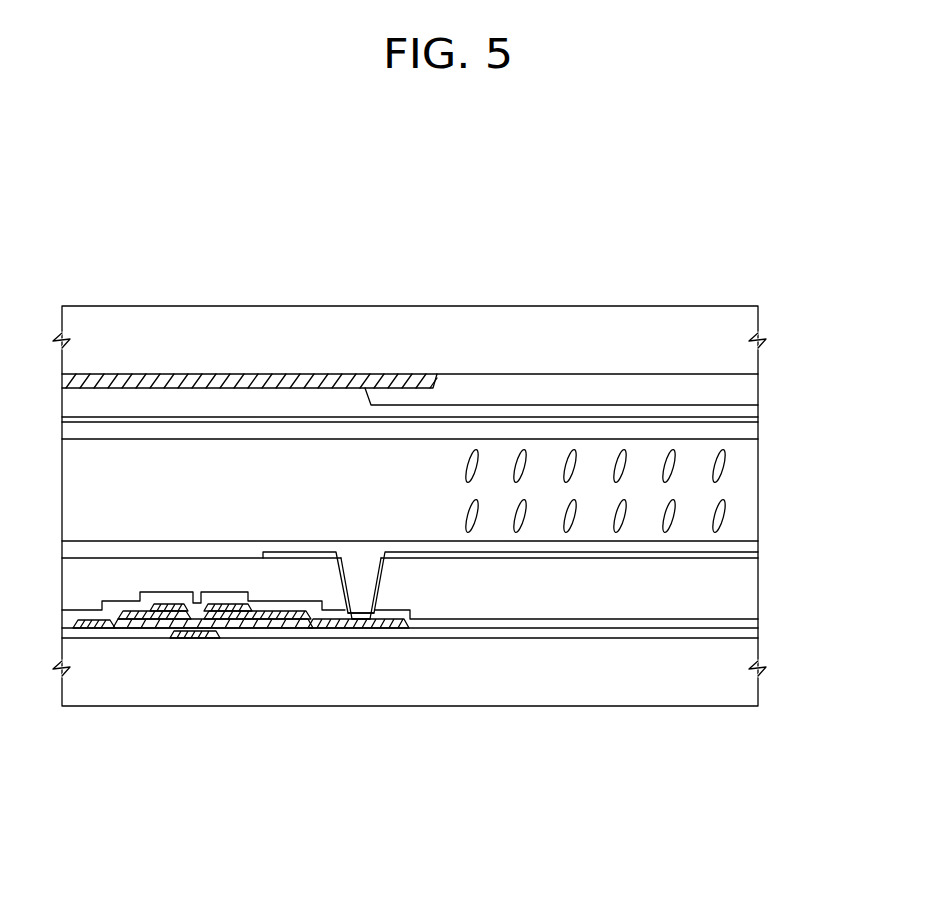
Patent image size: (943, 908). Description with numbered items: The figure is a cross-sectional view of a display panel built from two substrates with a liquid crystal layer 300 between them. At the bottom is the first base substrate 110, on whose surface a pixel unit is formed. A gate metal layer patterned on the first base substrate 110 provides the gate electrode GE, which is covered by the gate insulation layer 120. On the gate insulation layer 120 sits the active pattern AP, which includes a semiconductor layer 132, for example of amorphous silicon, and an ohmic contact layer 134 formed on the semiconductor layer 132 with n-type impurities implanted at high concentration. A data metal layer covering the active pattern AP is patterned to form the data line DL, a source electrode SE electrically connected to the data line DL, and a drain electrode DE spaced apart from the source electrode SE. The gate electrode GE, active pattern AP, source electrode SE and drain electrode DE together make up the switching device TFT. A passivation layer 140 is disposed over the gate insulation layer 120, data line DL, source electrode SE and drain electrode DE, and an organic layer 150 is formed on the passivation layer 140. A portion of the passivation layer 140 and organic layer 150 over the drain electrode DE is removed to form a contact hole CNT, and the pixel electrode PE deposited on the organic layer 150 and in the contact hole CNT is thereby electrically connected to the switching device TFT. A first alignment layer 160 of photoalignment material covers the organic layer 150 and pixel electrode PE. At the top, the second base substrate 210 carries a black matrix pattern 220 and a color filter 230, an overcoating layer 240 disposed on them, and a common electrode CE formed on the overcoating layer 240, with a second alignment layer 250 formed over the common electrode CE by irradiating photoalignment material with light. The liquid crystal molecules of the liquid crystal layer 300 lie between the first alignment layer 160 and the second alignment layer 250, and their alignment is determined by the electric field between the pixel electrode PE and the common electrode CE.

The second base substrate 210 is at (205, 338).
The black matrix pattern 220 is at (303, 380).
The color filter 230 is at (415, 395).
The overcoating layer 240 is at (490, 412).
The common electrode CE is at (557, 422).
The second alignment layer 250 is at (622, 431).
The liquid crystal layer 300 is at (771, 438).
The first alignment layer 160 is at (758, 545).
The pixel electrode PE is at (758, 555).
The organic layer 150 is at (758, 583).
The passivation layer 140 is at (758, 622).
The gate insulation layer 120 is at (758, 634).
The first base substrate 110 is at (758, 659).
The data line DL is at (95, 630).
The source electrode SE is at (135, 622).
The gate electrode GE is at (196, 636).
The drain electrode DE is at (240, 620).
The semiconductor layer 132 is at (250, 626).
The ohmic contact layer 134 is at (266, 618).
The active pattern AP is at (235, 708).
The contact hole CNT is at (372, 620).
The switching device TFT is at (261, 724).